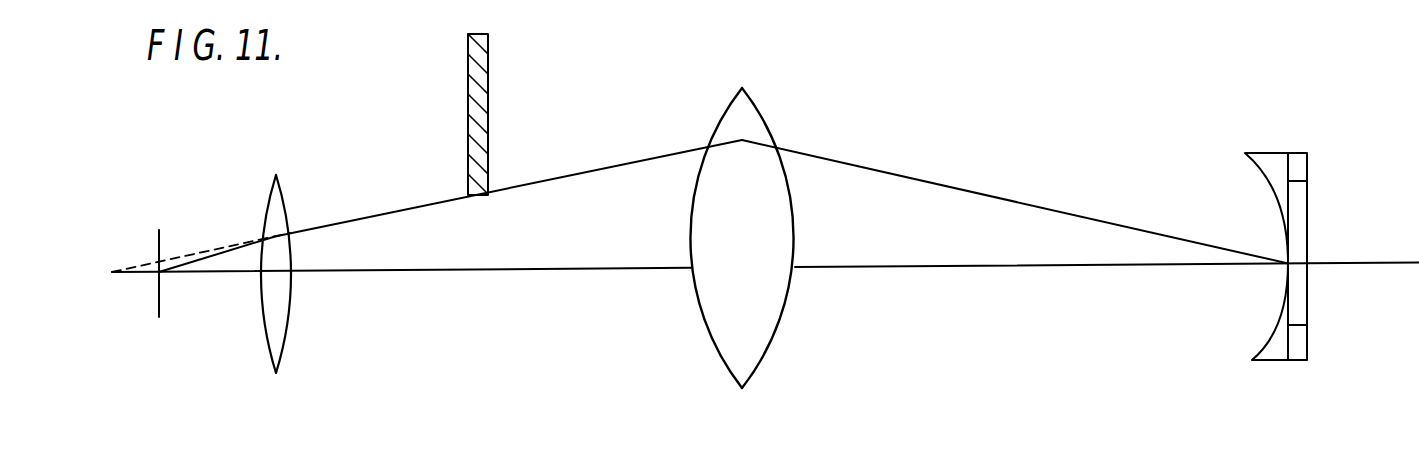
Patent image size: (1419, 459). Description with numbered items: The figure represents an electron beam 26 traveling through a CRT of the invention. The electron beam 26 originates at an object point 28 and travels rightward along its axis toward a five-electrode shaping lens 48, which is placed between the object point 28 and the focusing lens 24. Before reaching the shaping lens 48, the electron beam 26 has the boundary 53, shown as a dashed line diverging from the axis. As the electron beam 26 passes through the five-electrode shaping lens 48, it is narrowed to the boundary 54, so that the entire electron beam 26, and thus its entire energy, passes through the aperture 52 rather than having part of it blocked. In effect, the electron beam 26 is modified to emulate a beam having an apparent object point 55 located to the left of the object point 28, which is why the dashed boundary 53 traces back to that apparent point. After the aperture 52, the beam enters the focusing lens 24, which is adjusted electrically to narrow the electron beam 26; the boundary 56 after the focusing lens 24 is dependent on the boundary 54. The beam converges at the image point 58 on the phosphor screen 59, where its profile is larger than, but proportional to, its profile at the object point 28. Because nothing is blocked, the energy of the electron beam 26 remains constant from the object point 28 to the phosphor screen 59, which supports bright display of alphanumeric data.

The focusing lens 24 is at (760, 105).
The electron beam 26 is at (628, 228).
The object point 28 is at (163, 275).
The five-electrode shaping lens 48 is at (274, 187).
The aperture 52 is at (467, 107).
The boundary 53 is at (207, 250).
The boundary 54 is at (379, 216).
The apparent object point 55 is at (112, 271).
The boundary 56 is at (1007, 198).
The image point 58 is at (1287, 266).
The phosphor screen 59 is at (1307, 195).